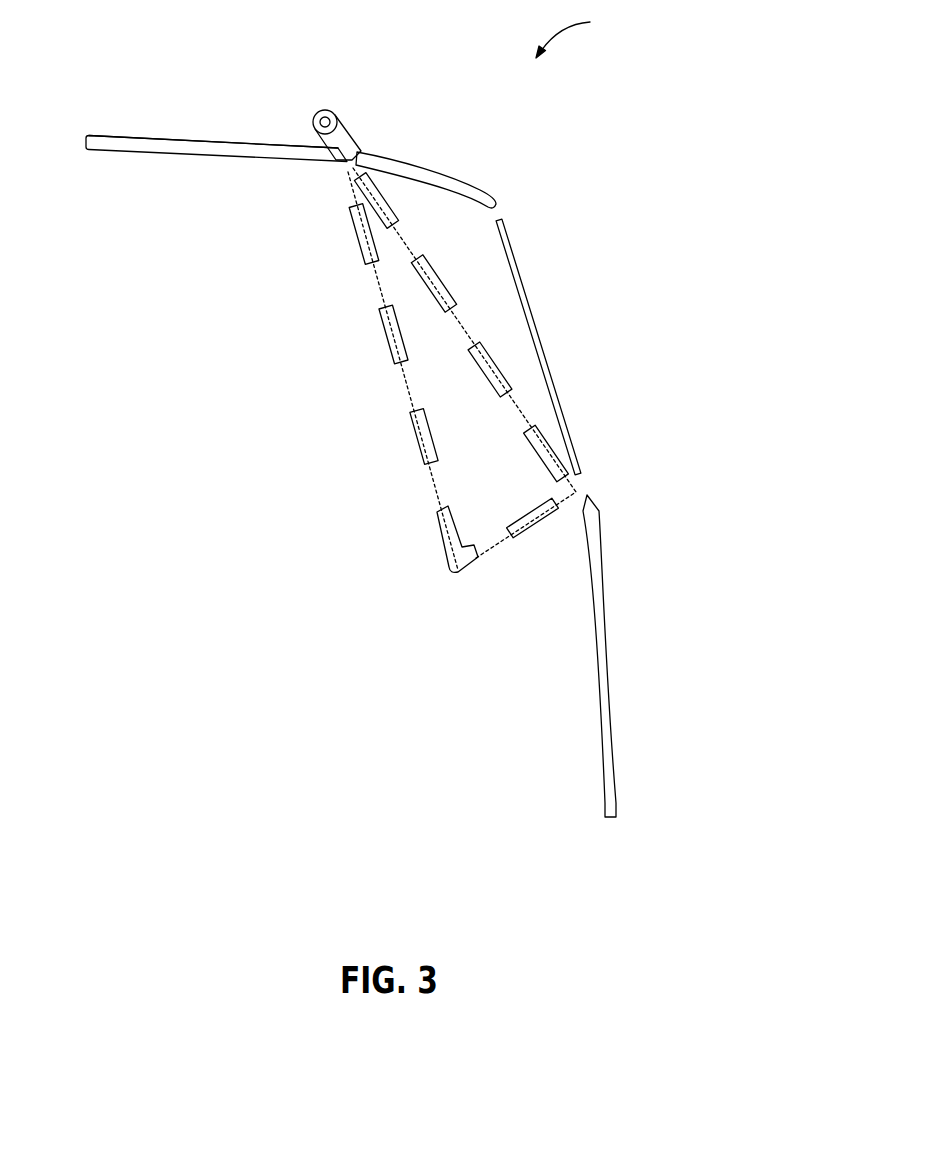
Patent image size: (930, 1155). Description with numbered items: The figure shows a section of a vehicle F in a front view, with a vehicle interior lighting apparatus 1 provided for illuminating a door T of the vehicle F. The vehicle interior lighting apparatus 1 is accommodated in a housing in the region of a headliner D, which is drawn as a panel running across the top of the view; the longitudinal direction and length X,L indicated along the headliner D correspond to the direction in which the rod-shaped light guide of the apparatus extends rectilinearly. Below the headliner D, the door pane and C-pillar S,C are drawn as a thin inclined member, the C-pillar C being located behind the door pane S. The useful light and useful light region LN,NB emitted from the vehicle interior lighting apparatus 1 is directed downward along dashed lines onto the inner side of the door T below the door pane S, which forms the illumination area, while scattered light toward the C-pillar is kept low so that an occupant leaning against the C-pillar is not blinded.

The vehicle F is at (572, 32).
The longitudinal direction and length X,L is at (180, 136).
The headliner D is at (222, 155).
The vehicle interior lighting apparatus 1 is at (350, 142).
The door pane and C-pillar S,C is at (517, 268).
The useful light and useful light region LN,NB is at (413, 435).
The door T is at (613, 715).